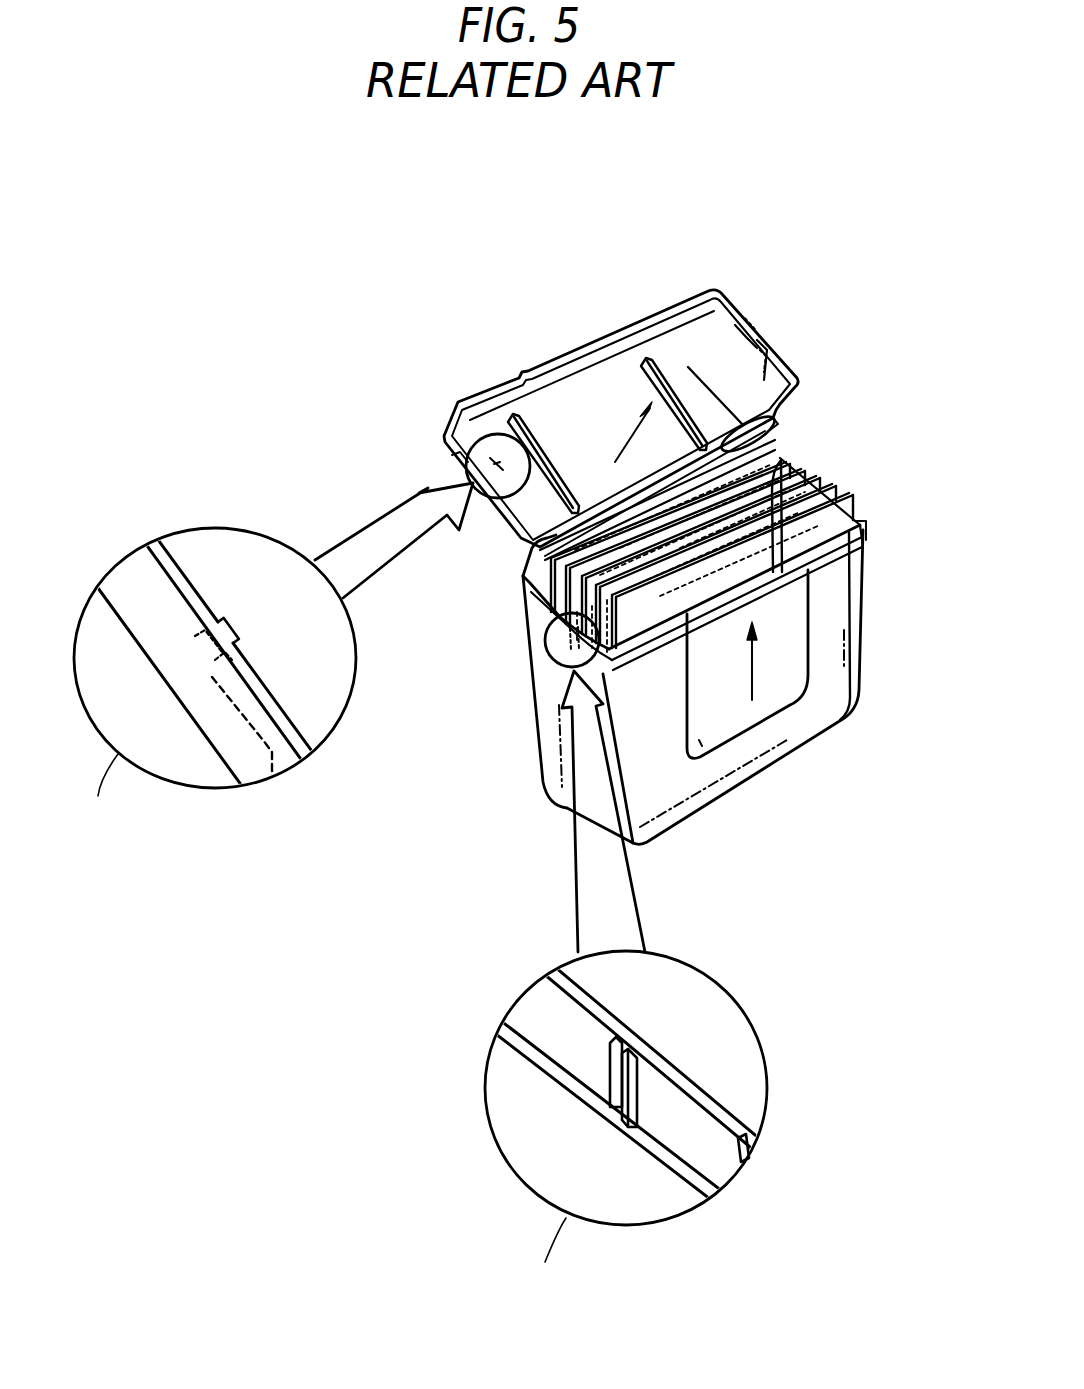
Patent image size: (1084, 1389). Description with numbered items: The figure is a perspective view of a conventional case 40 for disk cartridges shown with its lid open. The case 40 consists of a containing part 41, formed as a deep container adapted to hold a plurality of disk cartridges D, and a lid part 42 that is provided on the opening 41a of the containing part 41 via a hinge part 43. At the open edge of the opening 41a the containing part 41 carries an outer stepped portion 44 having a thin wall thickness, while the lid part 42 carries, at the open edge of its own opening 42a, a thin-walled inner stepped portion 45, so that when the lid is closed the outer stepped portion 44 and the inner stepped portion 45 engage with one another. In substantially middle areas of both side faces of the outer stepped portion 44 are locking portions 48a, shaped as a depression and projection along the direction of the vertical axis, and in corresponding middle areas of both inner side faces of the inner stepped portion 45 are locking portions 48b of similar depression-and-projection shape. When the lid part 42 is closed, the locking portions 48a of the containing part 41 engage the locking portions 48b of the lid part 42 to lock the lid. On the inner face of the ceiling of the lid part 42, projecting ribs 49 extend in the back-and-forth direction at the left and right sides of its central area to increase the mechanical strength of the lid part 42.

The case for disk cartridges 40 is at (836, 268).
The containing part 41 is at (784, 780).
The opening 41a is at (663, 597).
The lid part 42 is at (665, 303).
The opening 42a is at (592, 430).
The hinge part 43 is at (783, 418).
The outer stepped portion 44 is at (840, 547).
The inner stepped portion 45 is at (742, 336).
The locking portions 48a is at (545, 639).
The locking portions 48b is at (762, 337).
The projecting ribs 49 is at (546, 440).
The disk cartridges D is at (826, 462).